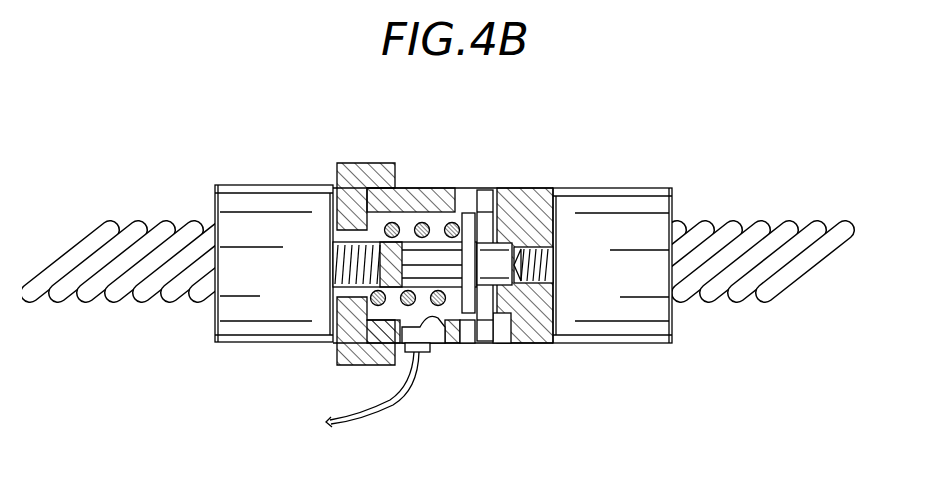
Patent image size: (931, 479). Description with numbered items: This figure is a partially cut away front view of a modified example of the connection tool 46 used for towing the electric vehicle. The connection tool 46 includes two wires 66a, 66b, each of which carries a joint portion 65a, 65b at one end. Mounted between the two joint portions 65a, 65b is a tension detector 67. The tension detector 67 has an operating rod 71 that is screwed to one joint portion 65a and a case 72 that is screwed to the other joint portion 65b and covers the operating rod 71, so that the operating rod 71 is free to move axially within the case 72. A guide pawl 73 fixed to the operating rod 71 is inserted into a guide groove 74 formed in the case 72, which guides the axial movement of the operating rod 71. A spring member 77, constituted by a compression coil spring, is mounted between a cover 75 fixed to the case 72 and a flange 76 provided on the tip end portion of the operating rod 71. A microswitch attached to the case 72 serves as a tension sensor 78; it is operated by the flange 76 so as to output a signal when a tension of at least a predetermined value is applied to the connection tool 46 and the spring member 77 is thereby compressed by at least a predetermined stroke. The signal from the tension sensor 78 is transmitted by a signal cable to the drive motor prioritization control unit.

The connection tool 46 is at (722, 178).
The joint portion 65a is at (280, 295).
The joint portion 65b is at (643, 300).
The wire 66a is at (72, 285).
The wire 66b is at (740, 295).
The tension detector 67 is at (536, 178).
The operating rod 71 is at (438, 262).
The case 72 is at (533, 323).
The guide pawl 73 is at (500, 340).
The guide groove 74 is at (465, 213).
The cover 75 is at (367, 163).
The flange 76 is at (485, 188).
The spring member 77 is at (391, 222).
The tension sensor 78 is at (437, 332).